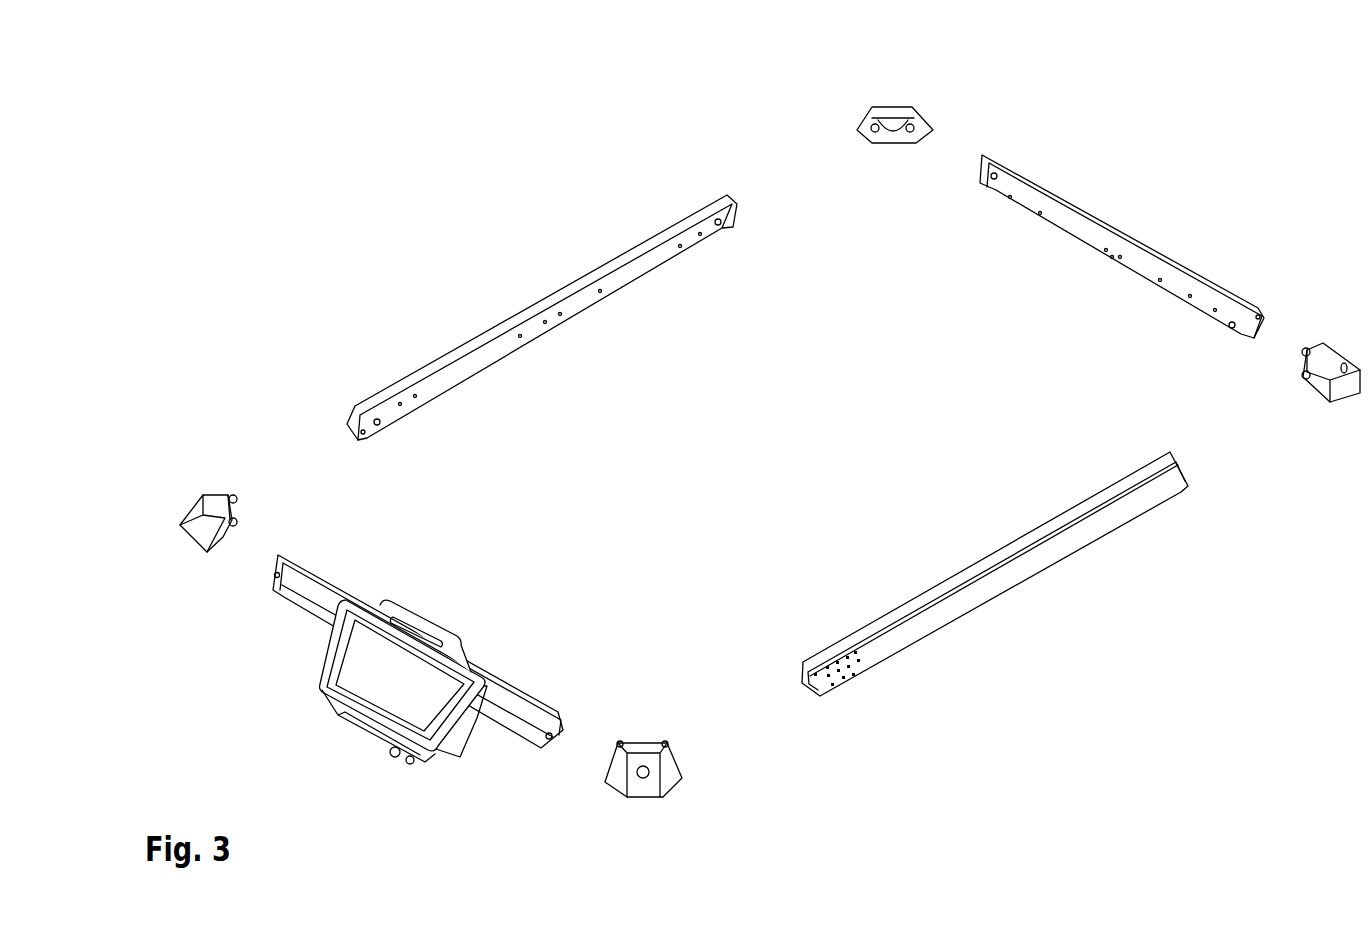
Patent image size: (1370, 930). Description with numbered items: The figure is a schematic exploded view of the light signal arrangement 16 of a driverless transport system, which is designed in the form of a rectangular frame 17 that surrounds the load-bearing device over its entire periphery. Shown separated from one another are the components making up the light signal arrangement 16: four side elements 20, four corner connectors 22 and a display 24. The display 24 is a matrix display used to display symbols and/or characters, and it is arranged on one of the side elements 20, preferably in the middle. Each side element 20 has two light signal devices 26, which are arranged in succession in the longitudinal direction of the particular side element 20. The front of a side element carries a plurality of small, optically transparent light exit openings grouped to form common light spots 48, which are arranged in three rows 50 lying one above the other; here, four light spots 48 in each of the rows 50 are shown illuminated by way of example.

The light signal arrangement 16 is at (302, 187).
The rectangular frame 17 is at (432, 160).
The side element 20 is at (455, 358).
The corner connector 22 is at (890, 113).
The display 24 is at (362, 684).
The light signal device 26 is at (675, 285).
The light spot 48 is at (835, 693).
The row 50 is at (865, 657).